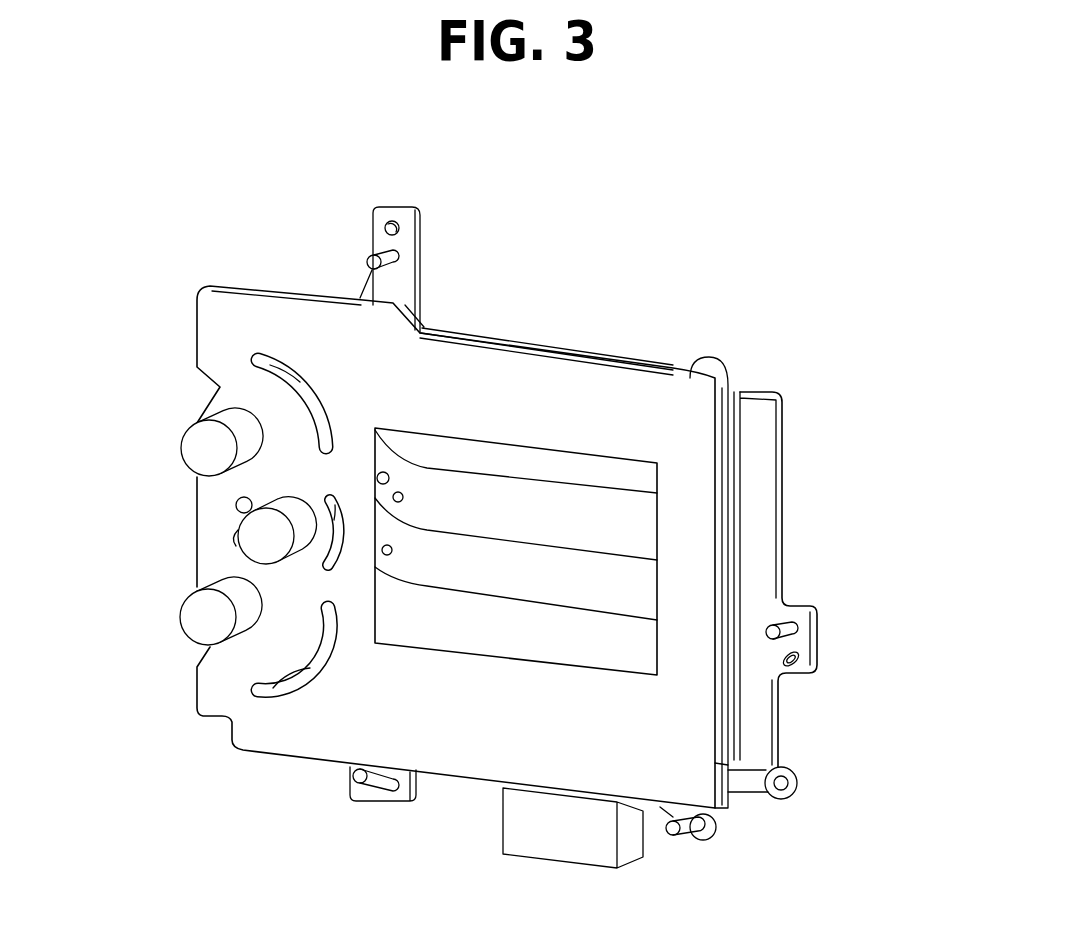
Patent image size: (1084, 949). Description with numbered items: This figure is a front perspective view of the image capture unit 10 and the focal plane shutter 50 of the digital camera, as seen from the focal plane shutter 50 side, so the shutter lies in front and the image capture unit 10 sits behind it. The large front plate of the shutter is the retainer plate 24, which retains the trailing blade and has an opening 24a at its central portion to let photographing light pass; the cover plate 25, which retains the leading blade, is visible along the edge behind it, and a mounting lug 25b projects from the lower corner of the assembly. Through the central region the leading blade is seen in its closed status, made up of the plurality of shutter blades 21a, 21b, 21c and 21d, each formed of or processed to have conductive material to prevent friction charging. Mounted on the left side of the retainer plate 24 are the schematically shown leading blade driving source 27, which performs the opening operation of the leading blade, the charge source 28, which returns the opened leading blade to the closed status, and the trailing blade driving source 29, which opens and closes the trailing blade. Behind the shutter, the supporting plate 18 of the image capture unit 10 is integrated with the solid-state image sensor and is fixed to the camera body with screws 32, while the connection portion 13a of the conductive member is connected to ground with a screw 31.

The focal plane shutter 50 is at (213, 243).
The image capture unit 10 is at (725, 239).
The retainer plate 24 is at (213, 310).
The opening 24a is at (483, 655).
The cover plate 25 is at (708, 362).
The mounting eyelet 25b is at (800, 780).
The supporting plate 18 is at (757, 405).
The connection portion 13a is at (722, 827).
The shutter blade 21a is at (637, 482).
The shutter blade 21b is at (637, 530).
The shutter blade 21c is at (637, 578).
The shutter blade 21d is at (625, 653).
The leading blade driving source 27 is at (197, 623).
The charge source 28 is at (237, 523).
The trailing blade driving source 29 is at (200, 452).
The screw 31 is at (693, 840).
The screws 32 is at (400, 256).